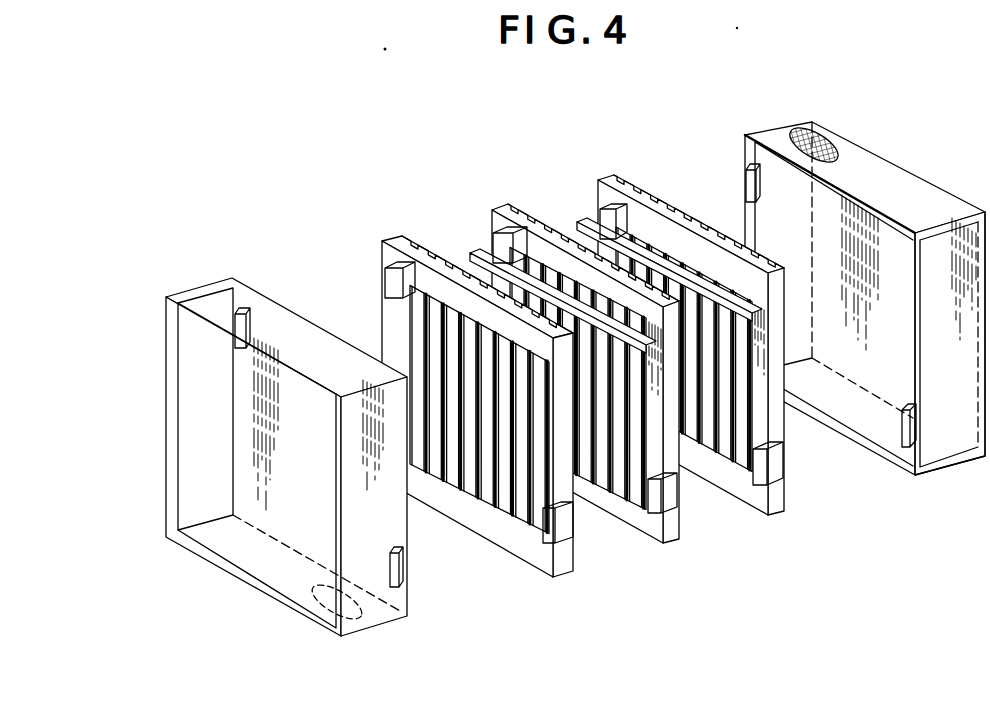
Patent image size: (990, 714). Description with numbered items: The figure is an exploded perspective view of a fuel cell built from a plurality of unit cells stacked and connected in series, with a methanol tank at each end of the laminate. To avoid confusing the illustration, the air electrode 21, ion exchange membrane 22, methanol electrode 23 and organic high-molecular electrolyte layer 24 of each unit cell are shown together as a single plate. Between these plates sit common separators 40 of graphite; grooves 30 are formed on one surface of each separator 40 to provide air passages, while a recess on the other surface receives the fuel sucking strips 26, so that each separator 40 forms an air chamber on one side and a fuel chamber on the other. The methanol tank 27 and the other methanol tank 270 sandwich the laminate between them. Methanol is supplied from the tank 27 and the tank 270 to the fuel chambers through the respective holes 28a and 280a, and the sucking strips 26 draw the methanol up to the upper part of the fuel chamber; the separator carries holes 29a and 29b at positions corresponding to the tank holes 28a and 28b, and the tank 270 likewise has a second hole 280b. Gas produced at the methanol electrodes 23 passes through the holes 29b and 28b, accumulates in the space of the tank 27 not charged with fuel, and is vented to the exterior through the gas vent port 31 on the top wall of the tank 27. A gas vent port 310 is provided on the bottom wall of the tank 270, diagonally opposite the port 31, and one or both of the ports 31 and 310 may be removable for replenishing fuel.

The air electrode 21 is at (597, 229).
The ion exchange membrane 22 is at (597, 229).
The methanol electrode 23 is at (577, 218).
The organic high-molecular electrolyte layer 24 is at (597, 229).
The sucking strips 26 is at (527, 533).
The methanol tank 27 is at (842, 302).
The hole 28a is at (907, 448).
The hole 28b is at (746, 176).
The hole 29a is at (549, 545).
The hole 29b is at (383, 287).
The grooves 30 is at (640, 186).
The gas vent port 31 is at (808, 134).
The common separators 40 is at (496, 210).
The methanol tank 270 is at (305, 455).
The hole 280a is at (408, 586).
The upper terminal opening of case 270 280b is at (245, 310).
The gas vent port 310 is at (327, 608).